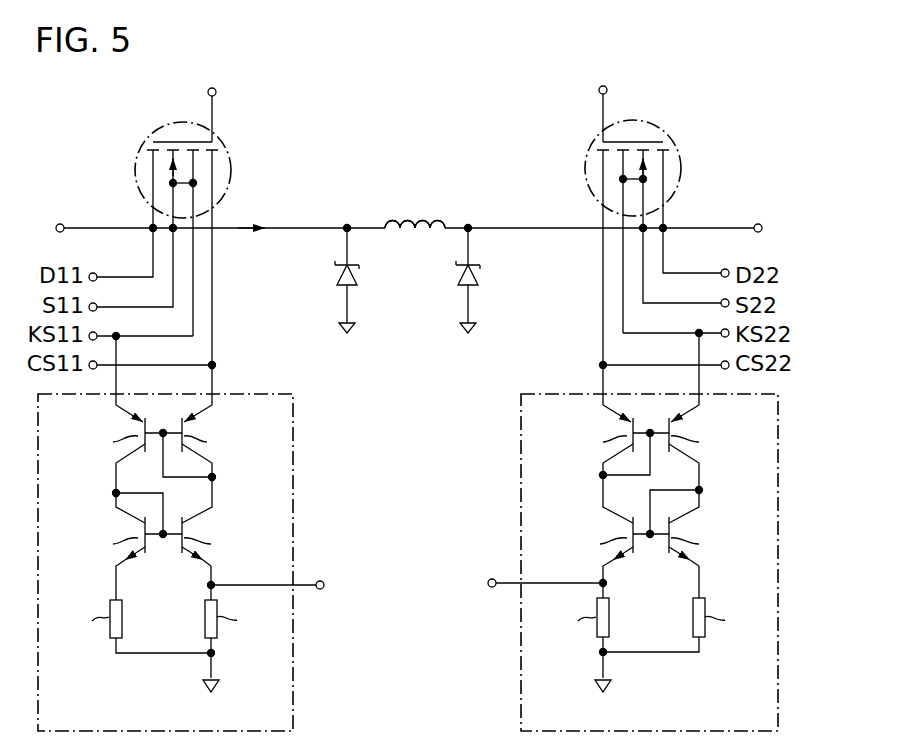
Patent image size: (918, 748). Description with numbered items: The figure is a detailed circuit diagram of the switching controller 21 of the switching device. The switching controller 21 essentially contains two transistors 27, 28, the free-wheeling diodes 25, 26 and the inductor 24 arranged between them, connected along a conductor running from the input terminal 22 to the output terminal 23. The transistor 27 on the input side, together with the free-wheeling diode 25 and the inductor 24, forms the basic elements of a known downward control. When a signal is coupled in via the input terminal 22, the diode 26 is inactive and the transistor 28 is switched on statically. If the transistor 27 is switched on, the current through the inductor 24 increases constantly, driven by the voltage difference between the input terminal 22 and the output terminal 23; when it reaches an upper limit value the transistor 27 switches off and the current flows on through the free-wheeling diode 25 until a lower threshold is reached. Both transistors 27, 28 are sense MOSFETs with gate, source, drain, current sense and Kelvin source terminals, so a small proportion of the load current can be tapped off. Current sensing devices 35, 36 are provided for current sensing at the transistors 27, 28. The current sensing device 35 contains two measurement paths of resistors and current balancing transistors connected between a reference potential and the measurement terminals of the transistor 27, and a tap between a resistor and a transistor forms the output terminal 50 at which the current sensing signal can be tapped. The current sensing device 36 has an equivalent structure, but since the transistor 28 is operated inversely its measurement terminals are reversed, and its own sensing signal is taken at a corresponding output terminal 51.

The switching controller 21 is at (411, 161).
The input terminal 22 is at (60, 223).
The output terminal 23 is at (758, 223).
The inductor 24 is at (422, 218).
The free-wheeling diode 25 is at (340, 278).
The free-wheeling diode 26 is at (466, 278).
The transistor 27 is at (140, 150).
The transistor 28 is at (676, 141).
The current sensing device 35 is at (294, 496).
The current sensing device 36 is at (521, 496).
The output terminal 50 is at (324, 585).
The current sense output terminal CS2 51 is at (488, 585).